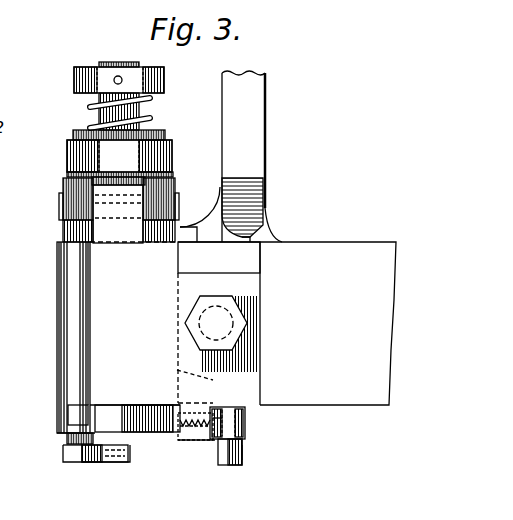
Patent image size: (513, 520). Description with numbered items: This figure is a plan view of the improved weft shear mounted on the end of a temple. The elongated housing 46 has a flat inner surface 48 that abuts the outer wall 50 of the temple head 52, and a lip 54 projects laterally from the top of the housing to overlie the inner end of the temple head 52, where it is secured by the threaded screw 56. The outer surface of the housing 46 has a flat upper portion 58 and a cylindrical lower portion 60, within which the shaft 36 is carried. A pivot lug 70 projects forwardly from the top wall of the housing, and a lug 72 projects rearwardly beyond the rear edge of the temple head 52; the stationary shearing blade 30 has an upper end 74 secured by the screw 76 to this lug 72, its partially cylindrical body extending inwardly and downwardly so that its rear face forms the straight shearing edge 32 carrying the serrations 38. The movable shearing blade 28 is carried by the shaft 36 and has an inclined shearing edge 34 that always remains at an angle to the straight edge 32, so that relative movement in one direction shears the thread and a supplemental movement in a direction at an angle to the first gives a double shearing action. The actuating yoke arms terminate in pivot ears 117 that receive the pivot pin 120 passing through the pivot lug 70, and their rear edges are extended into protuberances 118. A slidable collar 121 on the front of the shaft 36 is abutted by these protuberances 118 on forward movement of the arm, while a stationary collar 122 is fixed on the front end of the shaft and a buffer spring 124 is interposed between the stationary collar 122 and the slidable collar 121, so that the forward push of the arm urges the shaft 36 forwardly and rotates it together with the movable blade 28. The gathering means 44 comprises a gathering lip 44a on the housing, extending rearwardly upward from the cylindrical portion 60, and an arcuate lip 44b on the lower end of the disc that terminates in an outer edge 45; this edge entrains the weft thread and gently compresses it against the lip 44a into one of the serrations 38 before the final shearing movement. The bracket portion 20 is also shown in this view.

The bracket body 20 is at (97, 367).
The movable shearing blade 28 is at (228, 463).
The stationary shearing blade 30 is at (245, 415).
The straight shearing edge 32 is at (243, 438).
The shearing edge 34 is at (242, 453).
The shaft 36 is at (152, 102).
The serrations 38 is at (245, 441).
The gathering means 44 is at (62, 452).
The gathering lip 44a is at (92, 420).
The lip 44b is at (92, 462).
The outer edge 45 is at (66, 460).
The housing 46 is at (73, 348).
The flat inner surface 48 is at (177, 357).
The outer wall 50 is at (205, 381).
The temple head 52 is at (302, 260).
The lip 54 is at (247, 360).
The threaded screw 56 is at (220, 323).
The flat upper portion 58 is at (85, 308).
The cylindrical lower portion 60 is at (62, 312).
The pivot lug 70 is at (125, 191).
The lug 72 is at (192, 437).
The upper end 74 is at (213, 413).
The screw 76 is at (215, 425).
The pivot ears 117 is at (77, 190).
The protuberances 118 is at (68, 170).
The pivot pin 120 is at (62, 208).
The slidable collar 121 is at (153, 155).
The stationary collar 122 is at (164, 80).
The buffer spring 124 is at (150, 118).